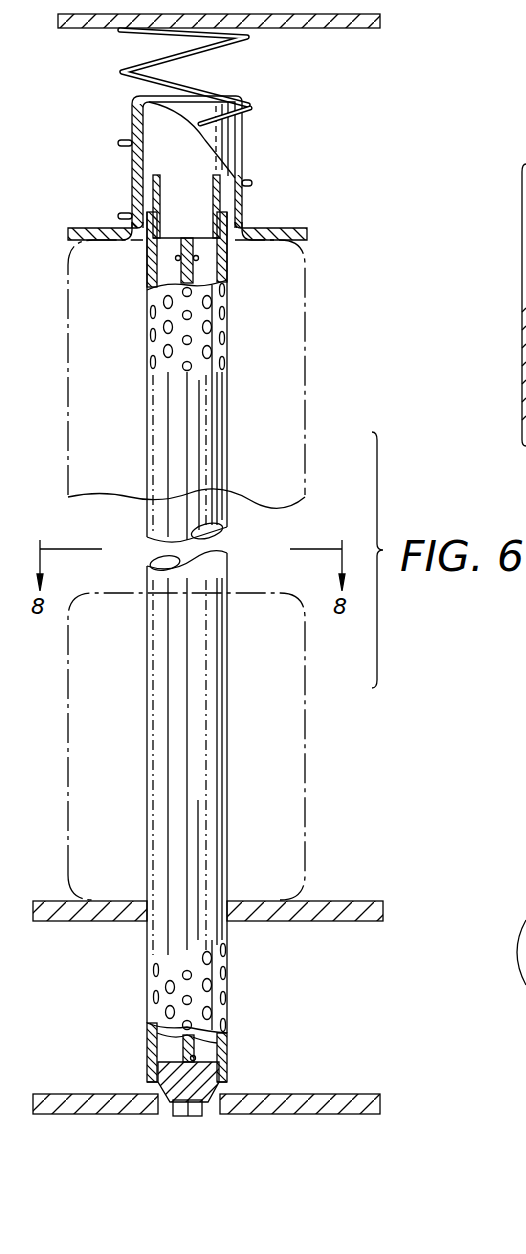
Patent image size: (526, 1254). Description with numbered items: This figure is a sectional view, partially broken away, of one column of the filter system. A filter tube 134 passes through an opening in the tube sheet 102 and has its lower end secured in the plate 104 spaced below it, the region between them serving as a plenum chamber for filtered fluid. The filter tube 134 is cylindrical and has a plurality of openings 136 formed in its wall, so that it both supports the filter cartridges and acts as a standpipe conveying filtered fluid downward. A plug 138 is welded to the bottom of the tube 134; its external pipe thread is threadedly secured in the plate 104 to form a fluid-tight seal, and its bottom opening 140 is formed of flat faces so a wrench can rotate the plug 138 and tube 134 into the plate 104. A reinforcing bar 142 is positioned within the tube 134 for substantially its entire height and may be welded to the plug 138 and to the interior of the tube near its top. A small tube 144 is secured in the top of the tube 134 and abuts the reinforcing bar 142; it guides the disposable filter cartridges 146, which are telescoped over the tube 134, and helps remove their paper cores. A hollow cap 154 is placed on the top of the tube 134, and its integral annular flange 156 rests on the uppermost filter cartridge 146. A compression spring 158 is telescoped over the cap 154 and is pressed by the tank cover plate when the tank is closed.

The tube sheet 102 is at (358, 921).
The plate 104 is at (336, 1094).
The filter tube 134 is at (226, 817).
The openings 136 is at (213, 331).
The plug 138 is at (163, 1118).
The bottom opening 140 is at (192, 1116).
The reinforcing bar 142 is at (197, 274).
The small tube 144 is at (196, 207).
The filter cartridges 146 is at (298, 432).
The hollow cap 154 is at (240, 142).
The annular flange 156 is at (288, 229).
The compression spring 158 is at (225, 45).